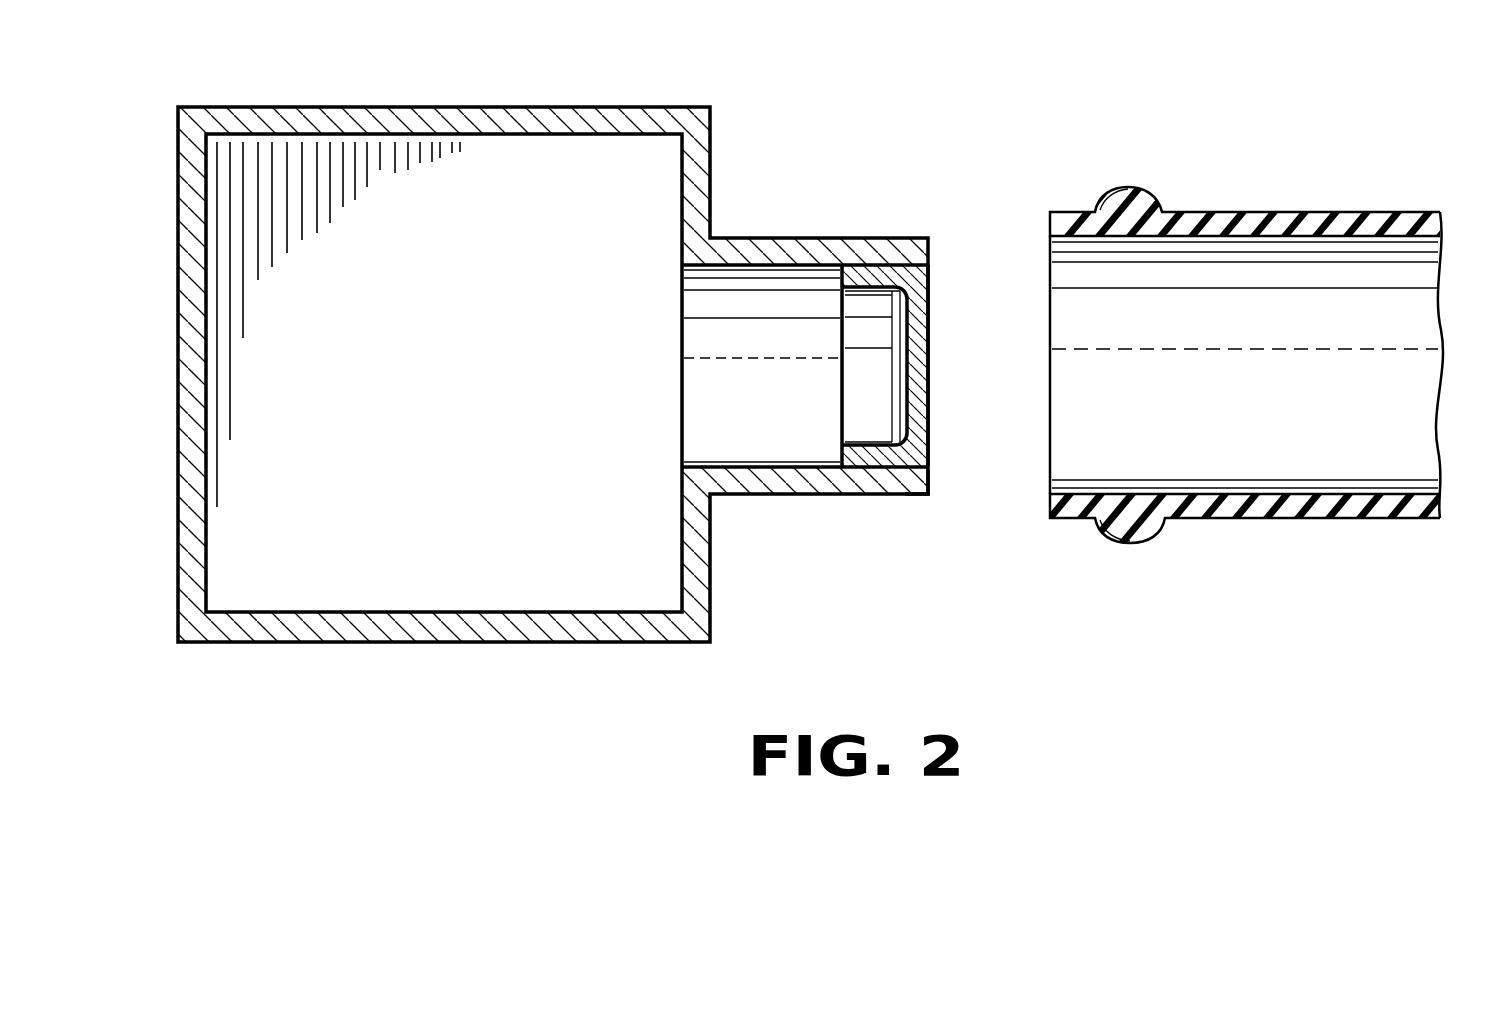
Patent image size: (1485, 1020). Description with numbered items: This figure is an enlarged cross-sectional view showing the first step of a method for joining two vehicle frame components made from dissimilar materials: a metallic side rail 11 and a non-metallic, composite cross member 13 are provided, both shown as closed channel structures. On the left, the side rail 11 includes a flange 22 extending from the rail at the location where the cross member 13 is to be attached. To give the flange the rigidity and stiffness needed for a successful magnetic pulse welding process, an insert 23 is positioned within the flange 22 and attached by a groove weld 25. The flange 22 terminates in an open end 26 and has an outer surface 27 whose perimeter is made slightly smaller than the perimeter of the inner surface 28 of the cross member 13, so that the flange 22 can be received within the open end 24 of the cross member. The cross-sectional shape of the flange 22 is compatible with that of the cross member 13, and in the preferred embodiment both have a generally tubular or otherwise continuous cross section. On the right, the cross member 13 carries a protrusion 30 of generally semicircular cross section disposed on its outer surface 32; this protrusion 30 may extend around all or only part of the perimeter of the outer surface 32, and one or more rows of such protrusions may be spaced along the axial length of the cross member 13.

The side rail 11 is at (466, 103).
The flange 22 is at (808, 232).
The groove weld 25 is at (922, 272).
The insert 23 is at (928, 378).
The open end of the flange 26 is at (938, 436).
The outer surface of the flange 27 is at (820, 496).
The cross member 13 is at (1141, 327).
The open end of the cross member 24 is at (1036, 278).
The inner surface of the cross member 28 is at (1105, 493).
The protrusion 30 is at (1150, 187).
The outer surface of the cross member 32 is at (1287, 212).